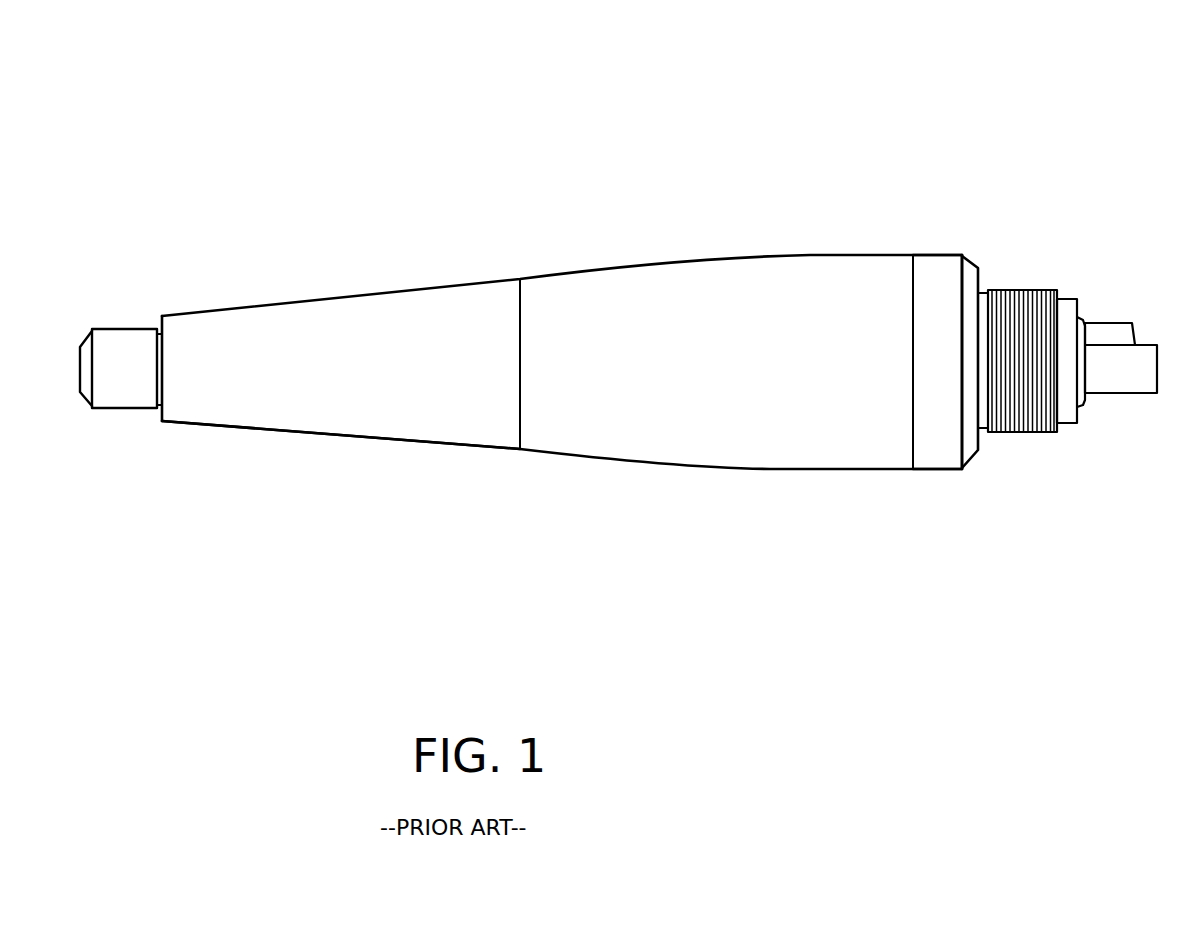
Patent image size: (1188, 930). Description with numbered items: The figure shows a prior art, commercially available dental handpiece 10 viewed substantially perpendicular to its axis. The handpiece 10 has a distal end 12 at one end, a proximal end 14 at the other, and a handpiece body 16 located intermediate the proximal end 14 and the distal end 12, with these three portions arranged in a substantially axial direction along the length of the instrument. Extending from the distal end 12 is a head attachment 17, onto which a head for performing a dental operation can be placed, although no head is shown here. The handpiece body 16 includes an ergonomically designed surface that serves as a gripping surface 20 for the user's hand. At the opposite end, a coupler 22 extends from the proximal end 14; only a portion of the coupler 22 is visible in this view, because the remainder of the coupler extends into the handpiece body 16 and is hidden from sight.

The dental handpiece 10 is at (688, 133).
The distal end 12 is at (217, 292).
The proximal end 14 is at (942, 253).
The handpiece body 16 is at (488, 448).
The head attachment 17 is at (105, 327).
The gripping surface 20 is at (485, 280).
The coupler 22 is at (1032, 430).